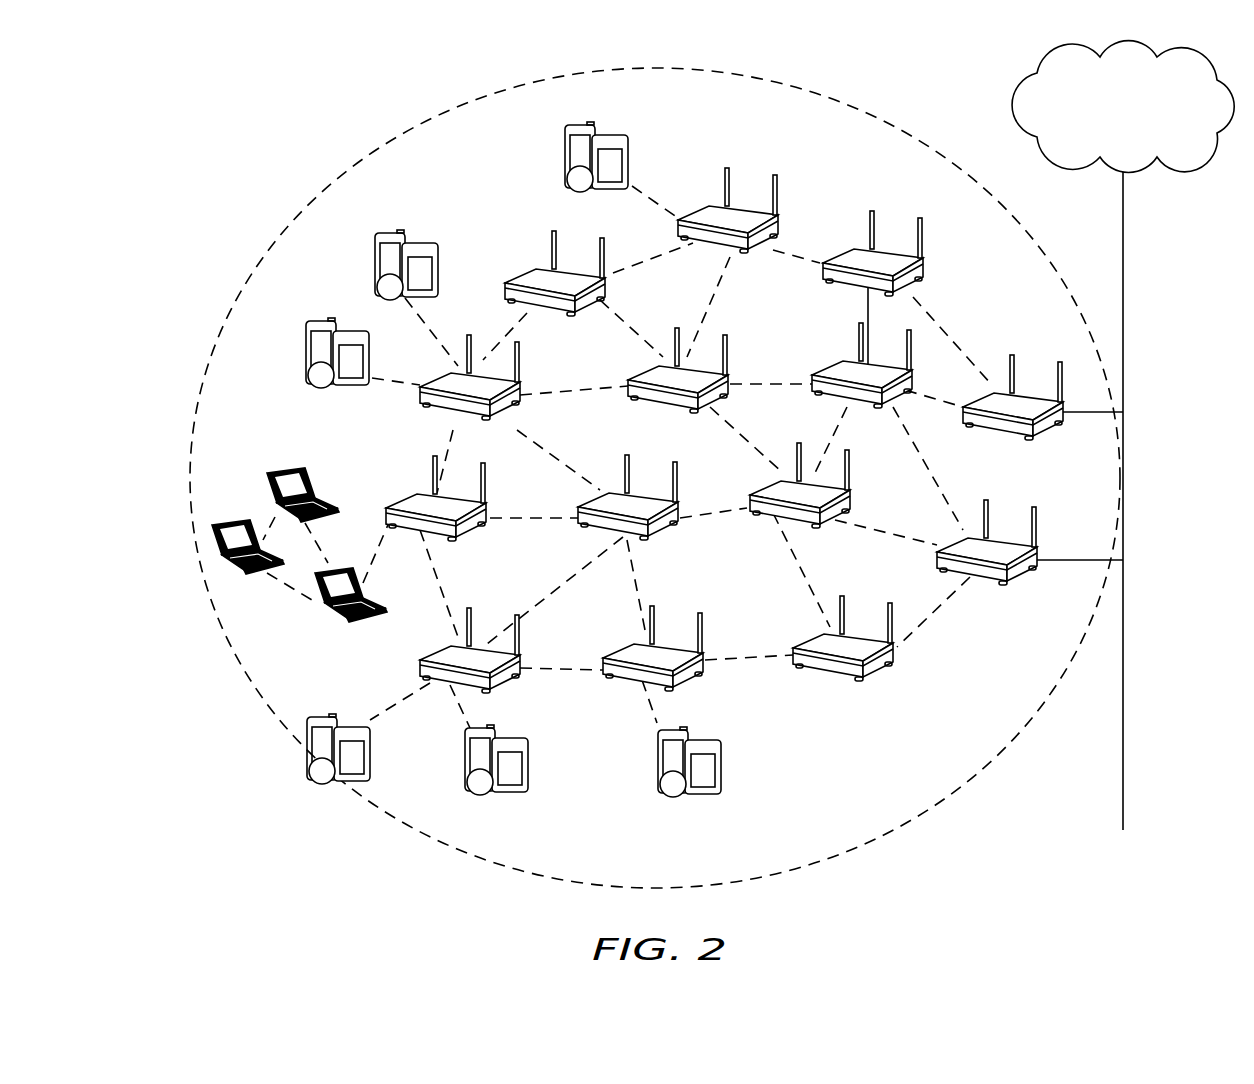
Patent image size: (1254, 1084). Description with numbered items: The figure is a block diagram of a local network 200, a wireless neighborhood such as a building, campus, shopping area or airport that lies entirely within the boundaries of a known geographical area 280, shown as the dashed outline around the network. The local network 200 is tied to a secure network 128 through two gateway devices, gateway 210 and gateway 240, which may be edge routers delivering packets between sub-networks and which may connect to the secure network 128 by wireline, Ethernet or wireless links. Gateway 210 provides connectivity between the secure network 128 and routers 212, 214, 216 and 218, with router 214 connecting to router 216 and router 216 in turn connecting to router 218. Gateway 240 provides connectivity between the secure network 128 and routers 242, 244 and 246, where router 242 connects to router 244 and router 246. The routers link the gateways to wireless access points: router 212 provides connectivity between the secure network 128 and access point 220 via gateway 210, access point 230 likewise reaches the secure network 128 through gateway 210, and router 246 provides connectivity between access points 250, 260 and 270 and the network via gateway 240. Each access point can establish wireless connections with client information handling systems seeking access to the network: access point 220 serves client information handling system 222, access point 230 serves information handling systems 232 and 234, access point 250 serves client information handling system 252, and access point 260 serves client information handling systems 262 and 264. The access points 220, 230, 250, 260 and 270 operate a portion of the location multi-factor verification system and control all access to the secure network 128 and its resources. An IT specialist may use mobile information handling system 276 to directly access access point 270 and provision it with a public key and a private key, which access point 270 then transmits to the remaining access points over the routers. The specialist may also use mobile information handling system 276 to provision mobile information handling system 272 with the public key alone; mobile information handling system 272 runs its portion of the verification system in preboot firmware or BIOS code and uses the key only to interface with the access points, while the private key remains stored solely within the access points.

The local network 200 is at (190, 198).
The geographical area 280 is at (786, 82).
The secure network 128 is at (1015, 107).
The gateway 210 is at (1003, 430).
The router 212 is at (840, 289).
The router 214 is at (818, 372).
The router 216 is at (664, 404).
The router 218 is at (530, 283).
The access point 220 is at (732, 250).
The client information handling system 222 is at (566, 150).
The access point 230 is at (446, 418).
The client information handling system 232 is at (410, 246).
The client information handling system 234 is at (314, 321).
The gateway 240 is at (996, 582).
The router 242 is at (850, 500).
The router 244 is at (876, 675).
The router 246 is at (668, 537).
The access point 250 is at (690, 682).
The client information handling system 252 is at (722, 784).
The access point 260 is at (504, 682).
The client information handling system 262 is at (529, 782).
The client information handling system 264 is at (371, 760).
The access point 270 is at (470, 537).
The mobile information handling system 272 is at (250, 573).
The mobile information handling system 276 is at (357, 620).